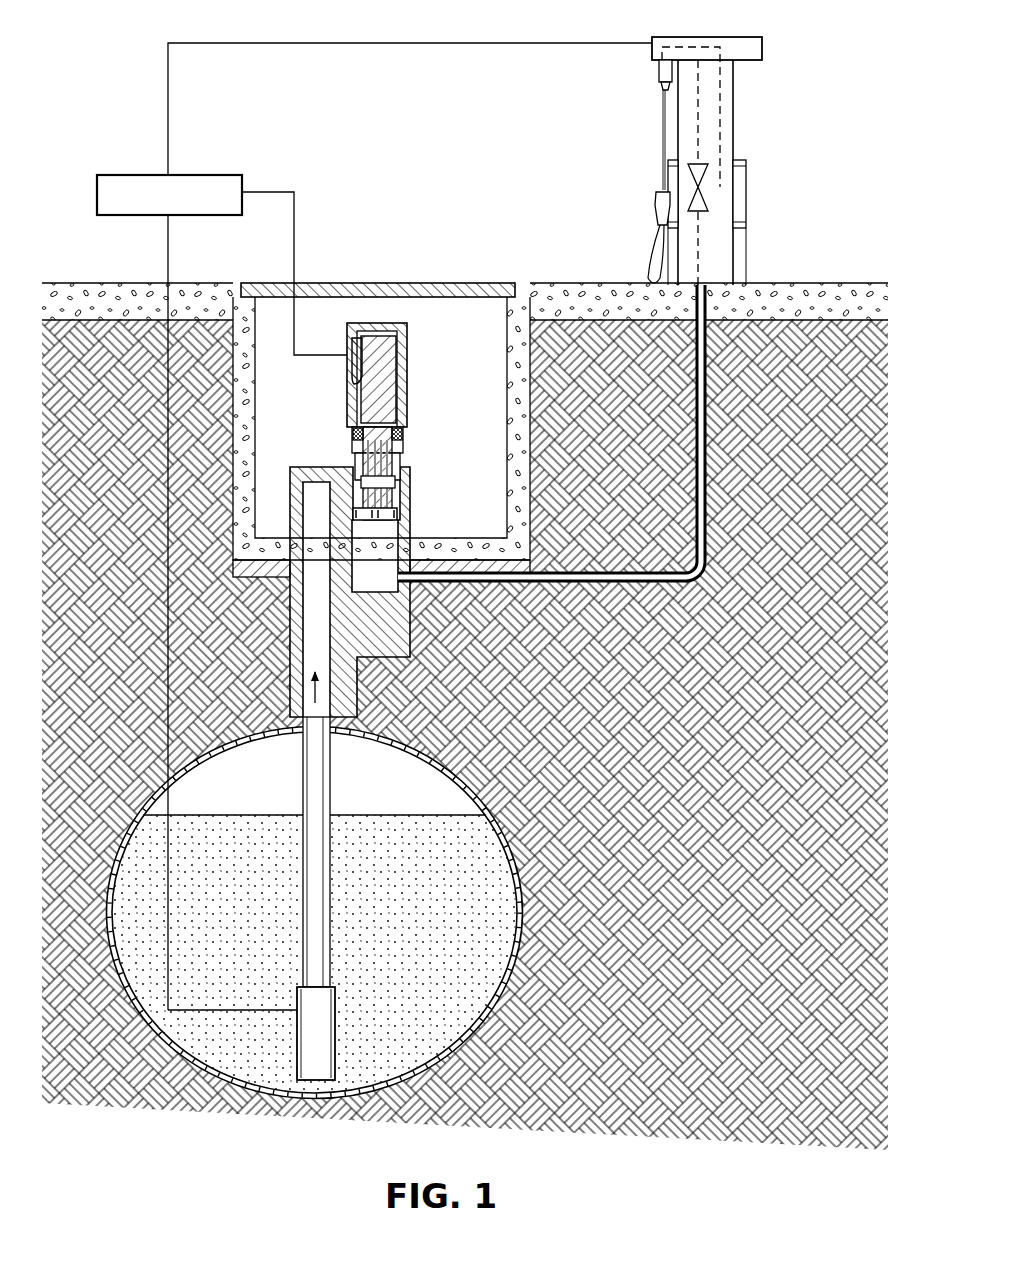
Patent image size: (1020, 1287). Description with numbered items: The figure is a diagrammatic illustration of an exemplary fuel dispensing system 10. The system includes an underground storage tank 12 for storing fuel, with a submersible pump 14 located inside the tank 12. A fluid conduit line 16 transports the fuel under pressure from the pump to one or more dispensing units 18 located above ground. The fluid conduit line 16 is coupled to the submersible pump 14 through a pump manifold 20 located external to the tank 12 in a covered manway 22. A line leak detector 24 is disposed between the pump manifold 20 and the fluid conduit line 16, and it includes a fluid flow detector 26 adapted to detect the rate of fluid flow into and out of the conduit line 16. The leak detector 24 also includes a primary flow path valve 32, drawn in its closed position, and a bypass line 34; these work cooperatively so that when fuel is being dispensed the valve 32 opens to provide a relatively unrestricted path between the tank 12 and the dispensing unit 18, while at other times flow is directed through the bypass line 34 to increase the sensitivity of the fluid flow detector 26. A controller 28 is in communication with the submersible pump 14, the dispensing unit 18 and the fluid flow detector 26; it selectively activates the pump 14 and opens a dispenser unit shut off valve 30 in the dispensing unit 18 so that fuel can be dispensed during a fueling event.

The fuel dispensing system 10 is at (415, 165).
The underground storage tank 12 is at (478, 793).
The submersible pump 14 is at (340, 1055).
The fluid conduit line 16 is at (625, 580).
The dispensing unit 18 is at (730, 161).
The pump manifold 20 is at (414, 638).
The covered manway 22 is at (488, 462).
The line leak detector 24 is at (379, 429).
The fluid flow detector 26 is at (350, 366).
The controller 28 is at (208, 175).
The dispenser unit shut off valve 30 is at (715, 210).
The primary flow path valve 32 is at (375, 535).
The bypass line 34 is at (408, 378).